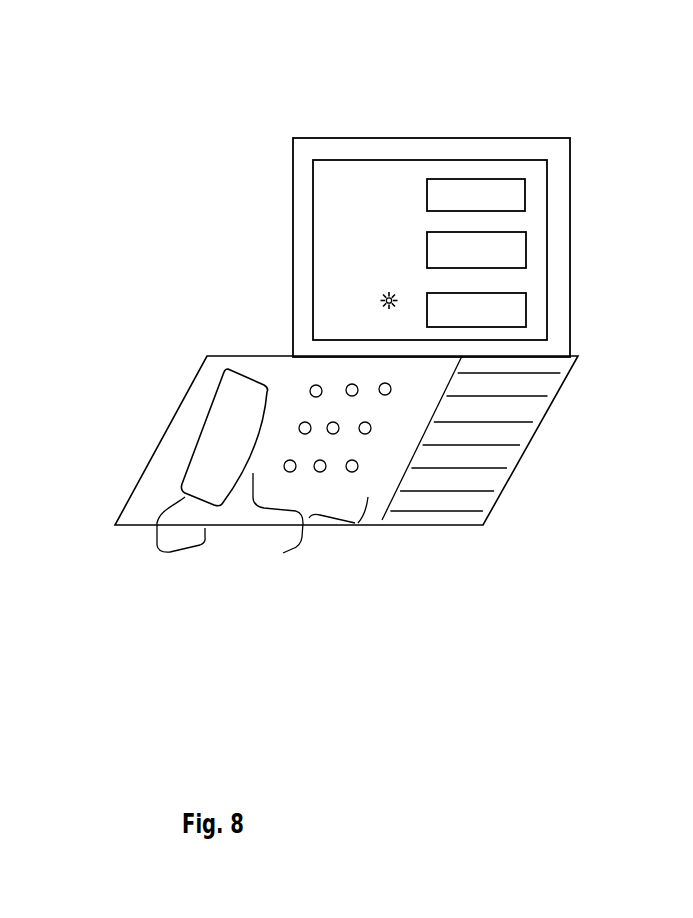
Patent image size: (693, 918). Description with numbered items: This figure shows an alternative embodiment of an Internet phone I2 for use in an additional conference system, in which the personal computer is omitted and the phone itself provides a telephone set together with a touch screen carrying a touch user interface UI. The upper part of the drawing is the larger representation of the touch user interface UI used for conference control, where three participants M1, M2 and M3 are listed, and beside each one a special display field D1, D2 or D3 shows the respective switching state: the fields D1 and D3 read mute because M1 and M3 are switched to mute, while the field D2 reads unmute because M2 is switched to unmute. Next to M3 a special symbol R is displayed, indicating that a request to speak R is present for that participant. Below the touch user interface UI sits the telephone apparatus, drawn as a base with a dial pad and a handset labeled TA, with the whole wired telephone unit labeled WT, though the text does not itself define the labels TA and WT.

The Internet phone I2 is at (272, 176).
The touch user interface UI is at (322, 287).
The request to speak symbol R is at (390, 292).
The display field D1 is at (525, 181).
The display field D2 is at (525, 235).
The display field D3 is at (525, 295).
The telephone handset TA is at (203, 423).
The wired telephone base WT is at (346, 459).